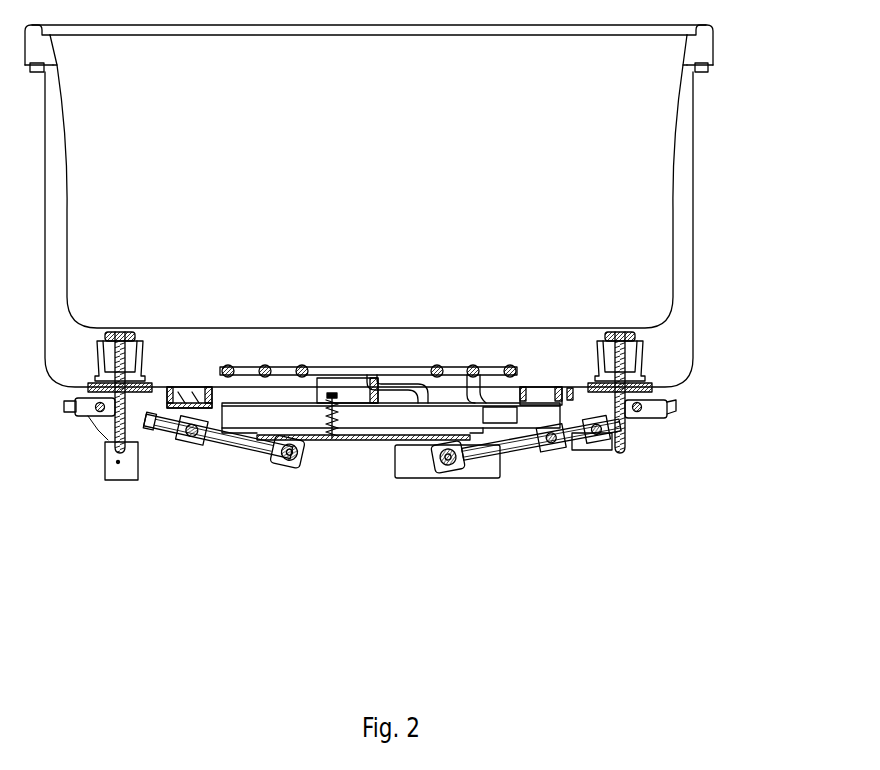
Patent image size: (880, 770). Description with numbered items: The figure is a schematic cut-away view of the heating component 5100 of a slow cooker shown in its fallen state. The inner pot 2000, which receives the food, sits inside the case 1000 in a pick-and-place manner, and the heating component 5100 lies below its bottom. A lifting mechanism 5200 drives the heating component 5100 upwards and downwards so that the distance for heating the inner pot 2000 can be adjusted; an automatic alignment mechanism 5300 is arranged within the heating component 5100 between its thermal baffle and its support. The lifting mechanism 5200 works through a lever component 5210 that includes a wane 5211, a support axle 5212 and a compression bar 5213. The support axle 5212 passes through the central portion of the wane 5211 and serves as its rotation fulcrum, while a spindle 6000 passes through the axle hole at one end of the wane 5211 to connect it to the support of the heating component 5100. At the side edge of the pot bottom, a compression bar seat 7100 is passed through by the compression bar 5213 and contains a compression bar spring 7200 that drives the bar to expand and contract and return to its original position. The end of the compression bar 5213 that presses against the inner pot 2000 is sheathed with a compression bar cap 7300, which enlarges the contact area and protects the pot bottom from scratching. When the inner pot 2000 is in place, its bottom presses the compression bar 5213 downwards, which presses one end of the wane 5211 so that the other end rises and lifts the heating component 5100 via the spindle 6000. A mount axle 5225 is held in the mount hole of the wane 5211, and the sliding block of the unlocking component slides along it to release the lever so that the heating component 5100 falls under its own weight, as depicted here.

The case 1000 is at (696, 112).
The inner pot 2000 is at (675, 157).
The compression bar cap 7300 is at (640, 336).
The compression bar spring 7200 is at (645, 362).
The compression bar seat 7100 is at (656, 383).
The mount axle 5225 is at (647, 414).
The compression bar 5213 is at (626, 440).
The wane 5211 is at (604, 455).
The lifting mechanism 5200 is at (88, 420).
The lever component 5210 is at (197, 445).
The support axle 5212 is at (565, 440).
The automatic alignment mechanism 5300 is at (333, 440).
The heating component 5100 is at (419, 478).
The spindle 6000 is at (460, 462).